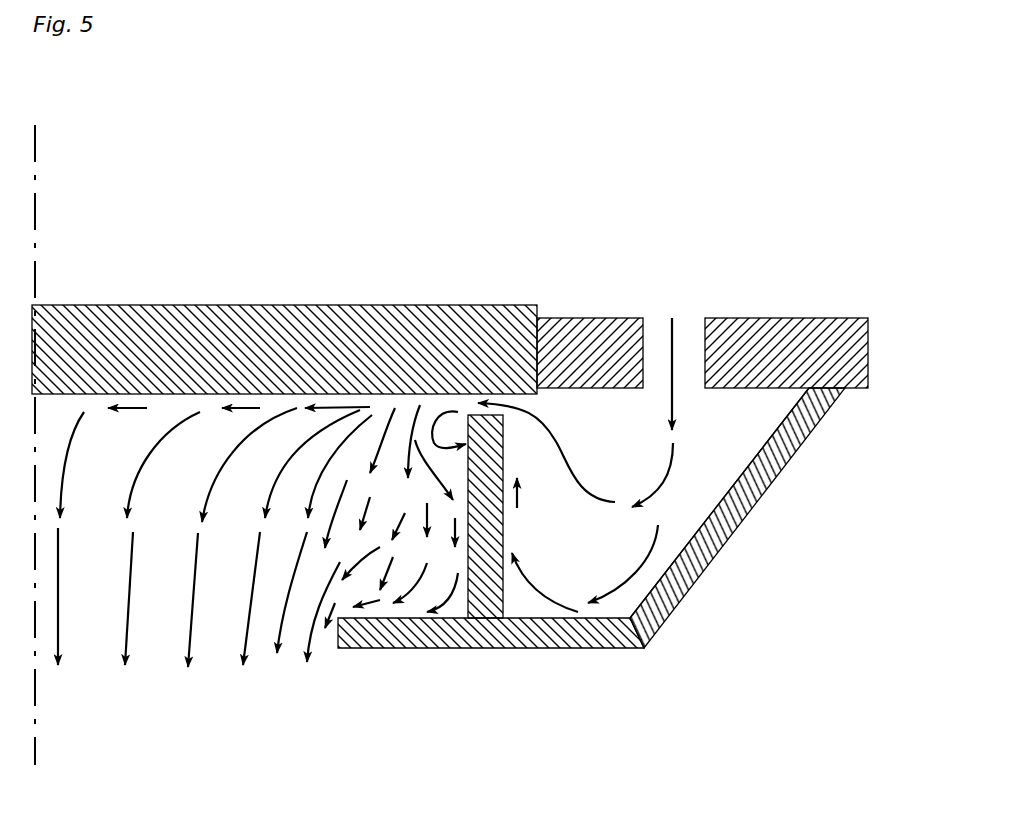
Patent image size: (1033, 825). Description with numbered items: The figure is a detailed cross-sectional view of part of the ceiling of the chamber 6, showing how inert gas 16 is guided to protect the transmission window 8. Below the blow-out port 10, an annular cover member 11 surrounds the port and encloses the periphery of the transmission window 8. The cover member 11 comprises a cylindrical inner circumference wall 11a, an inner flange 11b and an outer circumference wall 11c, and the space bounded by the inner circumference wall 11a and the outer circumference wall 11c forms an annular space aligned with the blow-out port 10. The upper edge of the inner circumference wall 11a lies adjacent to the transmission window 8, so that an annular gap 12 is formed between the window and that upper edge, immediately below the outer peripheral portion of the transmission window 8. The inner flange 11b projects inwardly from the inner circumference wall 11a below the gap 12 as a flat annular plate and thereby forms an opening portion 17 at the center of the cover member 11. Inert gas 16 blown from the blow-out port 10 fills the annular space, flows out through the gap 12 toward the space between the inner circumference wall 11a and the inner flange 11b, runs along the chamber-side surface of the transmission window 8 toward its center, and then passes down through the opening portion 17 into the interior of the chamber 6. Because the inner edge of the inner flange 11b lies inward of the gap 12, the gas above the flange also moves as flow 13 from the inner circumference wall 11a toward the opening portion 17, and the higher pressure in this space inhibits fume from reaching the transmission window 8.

The chamber 6 is at (775, 318).
The transmission window 8 is at (415, 307).
The blow-out port 10 is at (673, 312).
The cover member 11 is at (591, 571).
The inner circumference wall 11a is at (503, 517).
The inner flange 11b is at (372, 648).
The outer circumference wall 11c is at (750, 513).
The gap 12 is at (510, 413).
The flow 13 is at (413, 605).
The inert gas 16 is at (658, 475).
The opening portion 17 is at (205, 625).